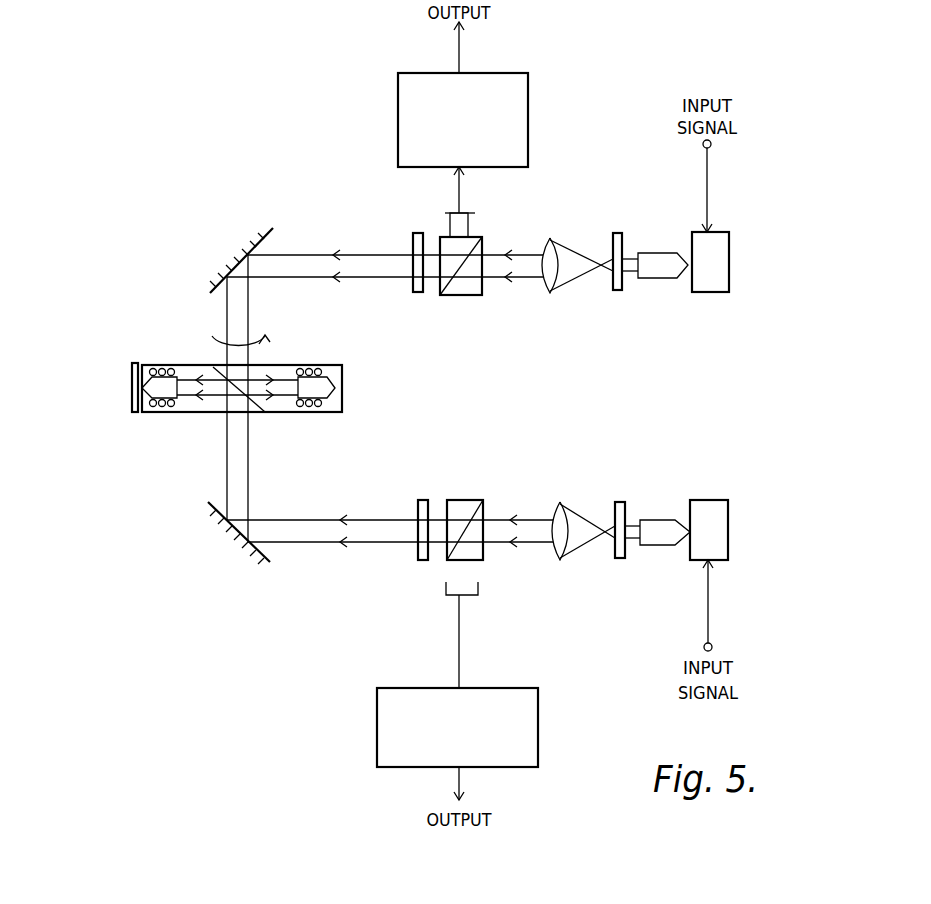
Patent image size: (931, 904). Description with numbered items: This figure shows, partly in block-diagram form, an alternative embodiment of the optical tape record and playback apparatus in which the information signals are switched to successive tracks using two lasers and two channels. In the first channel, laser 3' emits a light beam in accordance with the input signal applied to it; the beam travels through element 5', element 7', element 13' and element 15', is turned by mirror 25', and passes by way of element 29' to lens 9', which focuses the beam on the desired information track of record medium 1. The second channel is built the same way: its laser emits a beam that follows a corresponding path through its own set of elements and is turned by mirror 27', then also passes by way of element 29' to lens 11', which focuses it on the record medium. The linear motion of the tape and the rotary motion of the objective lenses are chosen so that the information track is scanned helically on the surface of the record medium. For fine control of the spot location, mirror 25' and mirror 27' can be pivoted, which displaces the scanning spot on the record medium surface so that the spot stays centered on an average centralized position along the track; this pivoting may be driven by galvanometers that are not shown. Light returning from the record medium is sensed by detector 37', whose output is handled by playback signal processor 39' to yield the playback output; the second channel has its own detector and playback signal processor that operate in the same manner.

The record medium 1 is at (133, 378).
The laser 3' is at (761, 284).
The path element 5' is at (663, 248).
The path element 7' is at (590, 243).
The lens 9' is at (328, 370).
The lens 11' is at (164, 360).
The path element 13' is at (467, 286).
The path element 15' is at (407, 284).
The mirror 25' is at (261, 250).
The mirror 27' is at (262, 545).
The path element 29' is at (224, 412).
The detector 37' is at (482, 202).
The playback signal processor 39' is at (491, 120).